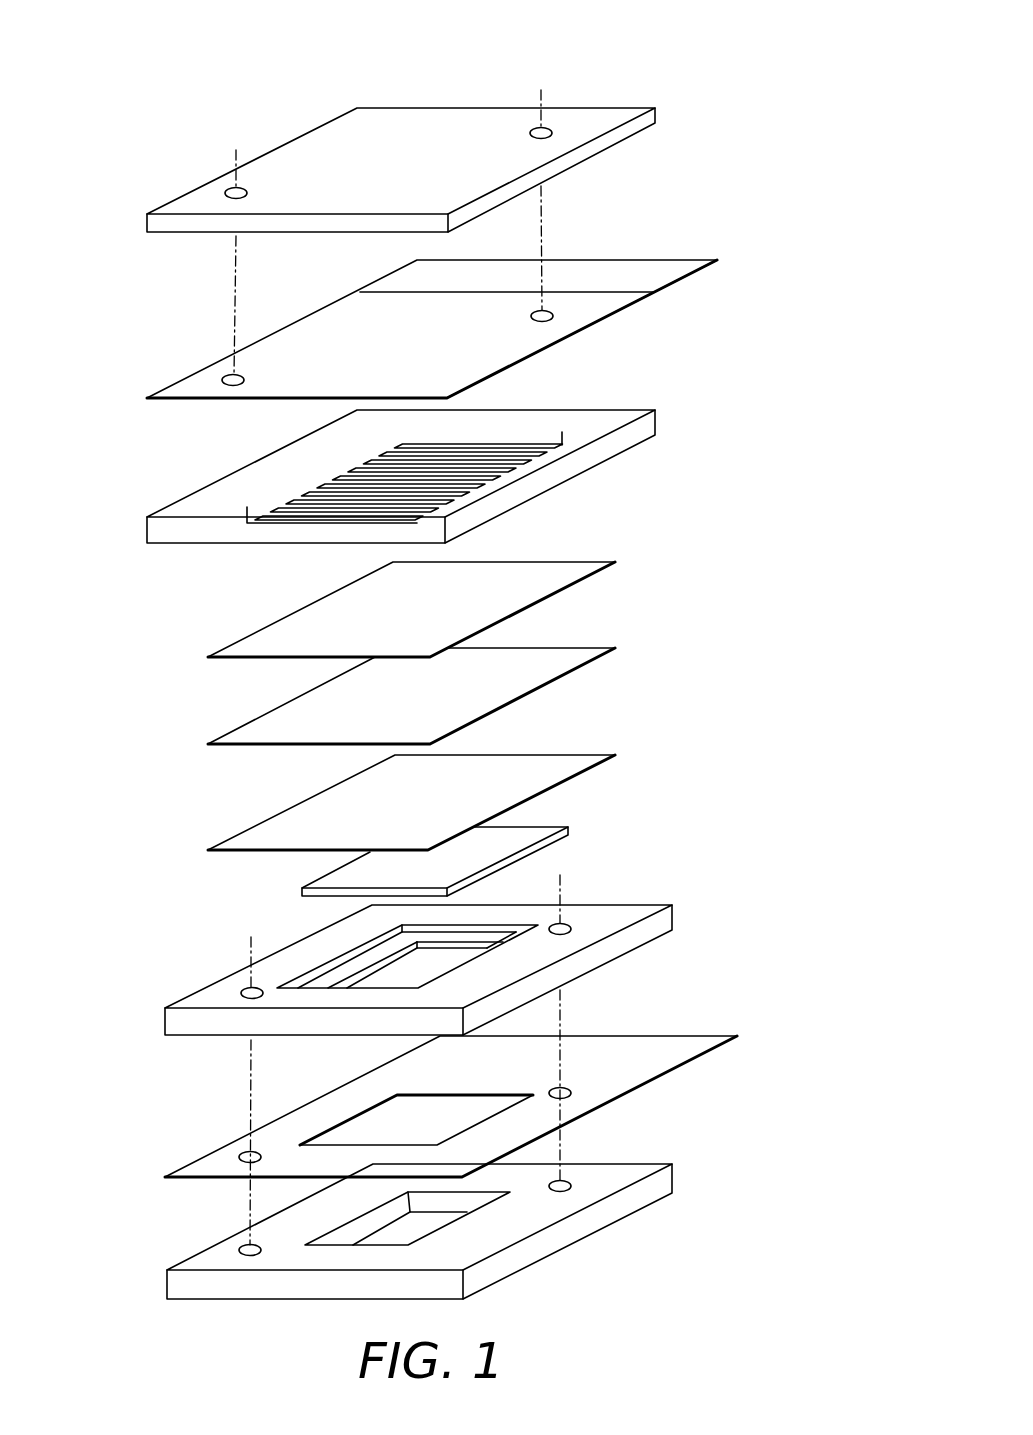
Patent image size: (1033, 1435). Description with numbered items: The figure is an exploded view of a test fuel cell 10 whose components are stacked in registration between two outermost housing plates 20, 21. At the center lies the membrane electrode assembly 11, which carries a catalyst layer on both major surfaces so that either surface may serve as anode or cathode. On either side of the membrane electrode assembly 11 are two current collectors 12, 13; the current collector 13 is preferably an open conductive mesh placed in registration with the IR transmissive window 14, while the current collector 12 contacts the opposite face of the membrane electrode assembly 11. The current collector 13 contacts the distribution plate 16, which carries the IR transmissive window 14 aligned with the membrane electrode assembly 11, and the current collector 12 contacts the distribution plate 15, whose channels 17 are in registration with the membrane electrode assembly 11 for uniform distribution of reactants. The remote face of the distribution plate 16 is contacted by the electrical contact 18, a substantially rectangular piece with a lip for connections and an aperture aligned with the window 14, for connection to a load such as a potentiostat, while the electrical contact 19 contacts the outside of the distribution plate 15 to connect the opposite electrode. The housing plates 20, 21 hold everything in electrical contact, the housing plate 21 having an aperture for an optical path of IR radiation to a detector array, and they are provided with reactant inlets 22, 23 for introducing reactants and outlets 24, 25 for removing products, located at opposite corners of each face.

The test cell 10 is at (746, 57).
The membrane electrode assembly 11 is at (590, 648).
The current collector 12 is at (584, 560).
The current collector 13 is at (588, 755).
The IR transmissive window 14 is at (550, 827).
The distribution plate 15 is at (657, 424).
The distribution plate 16 is at (643, 905).
The flow channels 17 is at (297, 497).
The electrical contact 18 is at (725, 1036).
The electrical contact 19 is at (627, 310).
The housing plate 20 is at (455, 123).
The housing plate 21 is at (673, 1180).
The reactant inlet 22 is at (570, 928).
The reactant inlet 23 is at (546, 310).
The outlet 24 is at (222, 375).
The outlet 25 is at (245, 992).